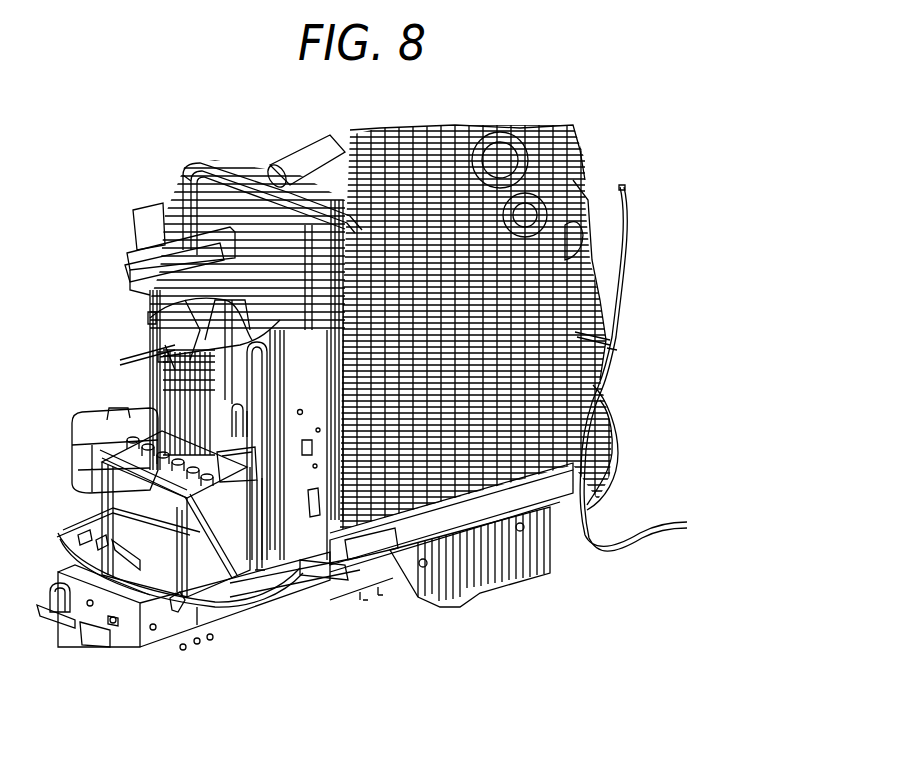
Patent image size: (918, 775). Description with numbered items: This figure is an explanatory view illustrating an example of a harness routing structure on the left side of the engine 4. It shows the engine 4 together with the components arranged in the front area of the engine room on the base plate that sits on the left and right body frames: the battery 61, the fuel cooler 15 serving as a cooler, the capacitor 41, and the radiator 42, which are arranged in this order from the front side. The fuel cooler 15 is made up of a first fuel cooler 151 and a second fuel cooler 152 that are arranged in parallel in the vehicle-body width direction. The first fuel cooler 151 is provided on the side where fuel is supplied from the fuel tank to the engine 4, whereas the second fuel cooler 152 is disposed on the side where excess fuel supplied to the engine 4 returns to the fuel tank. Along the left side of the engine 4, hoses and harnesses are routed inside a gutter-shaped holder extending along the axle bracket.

The engine 4 is at (588, 262).
The fuel cooler 15 is at (320, 547).
The capacitor 41 is at (337, 548).
The radiator 42 is at (385, 548).
The battery 61 is at (217, 573).
The first fuel cooler 151 is at (160, 357).
The second fuel cooler 152 is at (150, 318).